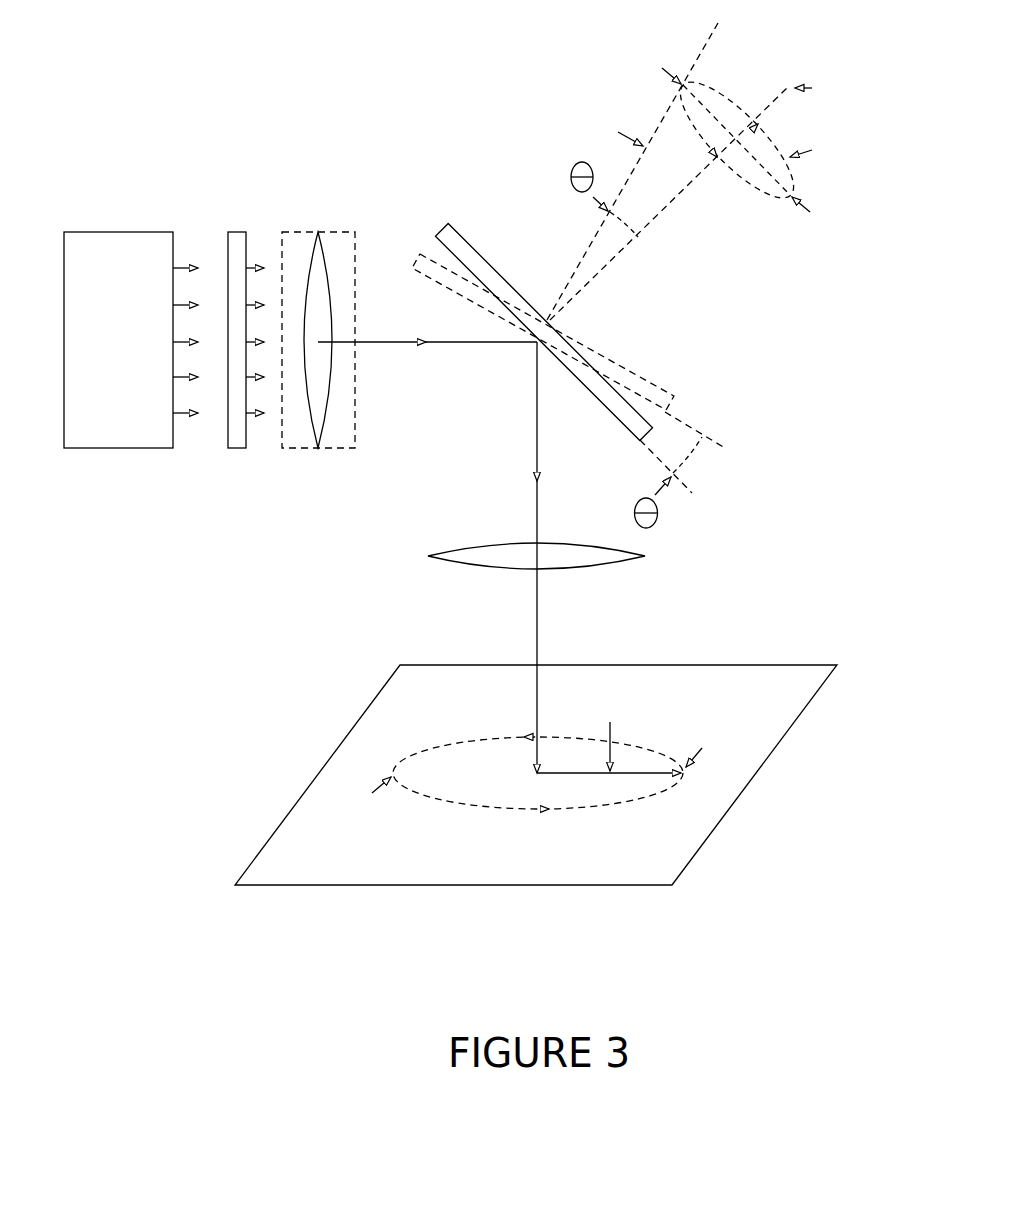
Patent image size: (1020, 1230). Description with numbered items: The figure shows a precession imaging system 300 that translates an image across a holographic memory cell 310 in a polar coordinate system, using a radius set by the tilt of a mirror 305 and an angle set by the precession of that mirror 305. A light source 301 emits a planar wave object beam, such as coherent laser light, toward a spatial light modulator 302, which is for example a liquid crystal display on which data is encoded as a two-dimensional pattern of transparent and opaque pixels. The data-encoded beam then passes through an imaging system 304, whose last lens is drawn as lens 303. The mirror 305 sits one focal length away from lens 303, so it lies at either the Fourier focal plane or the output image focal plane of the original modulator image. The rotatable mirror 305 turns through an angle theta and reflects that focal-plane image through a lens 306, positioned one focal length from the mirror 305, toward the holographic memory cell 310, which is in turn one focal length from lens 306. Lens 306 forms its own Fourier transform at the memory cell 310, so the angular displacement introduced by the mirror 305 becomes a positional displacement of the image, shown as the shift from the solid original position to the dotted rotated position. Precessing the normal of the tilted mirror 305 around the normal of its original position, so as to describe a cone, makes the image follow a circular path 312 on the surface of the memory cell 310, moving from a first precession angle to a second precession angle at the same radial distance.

The precession imaging system 300 is at (181, 949).
The light source 301 is at (118, 231).
The spatial light modulator 302 is at (237, 231).
The lens 303 is at (318, 231).
The imaging system 304 is at (292, 449).
The mirror 305 is at (411, 267).
The lens 306 is at (427, 556).
The holographic memory cell 310 is at (792, 664).
The circular path 312 is at (515, 814).